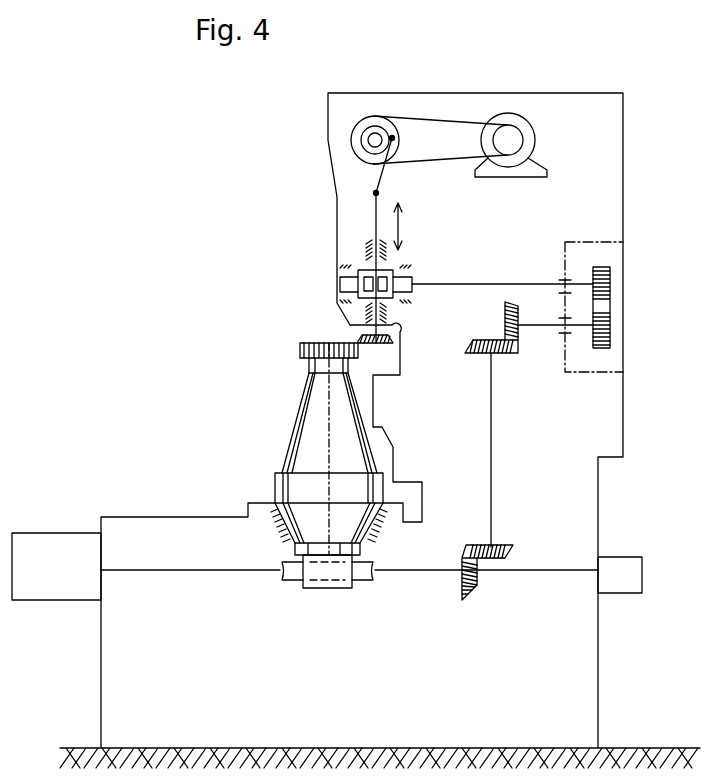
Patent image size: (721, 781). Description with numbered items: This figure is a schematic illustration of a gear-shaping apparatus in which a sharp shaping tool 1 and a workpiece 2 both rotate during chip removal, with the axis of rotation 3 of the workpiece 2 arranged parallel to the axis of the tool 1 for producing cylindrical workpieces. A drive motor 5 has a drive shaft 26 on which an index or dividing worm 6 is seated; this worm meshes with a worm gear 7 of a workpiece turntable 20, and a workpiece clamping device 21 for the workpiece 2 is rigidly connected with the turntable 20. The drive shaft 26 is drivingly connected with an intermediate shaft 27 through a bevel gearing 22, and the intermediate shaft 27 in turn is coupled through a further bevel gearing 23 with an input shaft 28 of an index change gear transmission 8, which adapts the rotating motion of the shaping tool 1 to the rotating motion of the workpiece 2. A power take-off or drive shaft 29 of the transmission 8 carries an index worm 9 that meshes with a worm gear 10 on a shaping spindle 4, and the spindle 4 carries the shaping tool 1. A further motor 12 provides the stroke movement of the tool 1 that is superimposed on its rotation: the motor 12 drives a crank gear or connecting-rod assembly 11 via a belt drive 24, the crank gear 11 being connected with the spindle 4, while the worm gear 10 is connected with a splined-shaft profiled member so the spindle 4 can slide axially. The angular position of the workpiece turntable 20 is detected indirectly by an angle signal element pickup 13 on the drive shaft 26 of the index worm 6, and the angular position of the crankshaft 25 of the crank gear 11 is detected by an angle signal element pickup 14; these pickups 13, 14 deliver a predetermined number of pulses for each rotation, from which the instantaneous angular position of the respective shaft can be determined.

The shaping tool 1 is at (393, 336).
The workpiece 2 is at (305, 343).
The axis of rotation 3 is at (304, 449).
The shaping spindle 4 is at (373, 214).
The drive motor 5 is at (60, 575).
The index worm 6 is at (310, 590).
The worm gear 7 is at (358, 580).
The index change gear transmission 8 is at (610, 292).
The index worm 9 is at (359, 269).
The worm gear 10 is at (348, 284).
The crank gear 11 is at (378, 176).
The motor 12 is at (511, 131).
The angle signal element pickup 13 is at (642, 580).
The angle signal element pickup 14 is at (386, 126).
The workpiece turntable 20 is at (283, 487).
The workpiece clamping device 21 is at (303, 443).
The bevel gearing 22 is at (483, 563).
The bevel gearing 23 is at (497, 353).
The belt drive 24 is at (447, 121).
The crankshaft 25 is at (372, 132).
The drive shaft 26 is at (203, 570).
The intermediate shaft 27 is at (492, 455).
The input shaft 28 is at (543, 326).
The drive shaft 29 is at (468, 283).